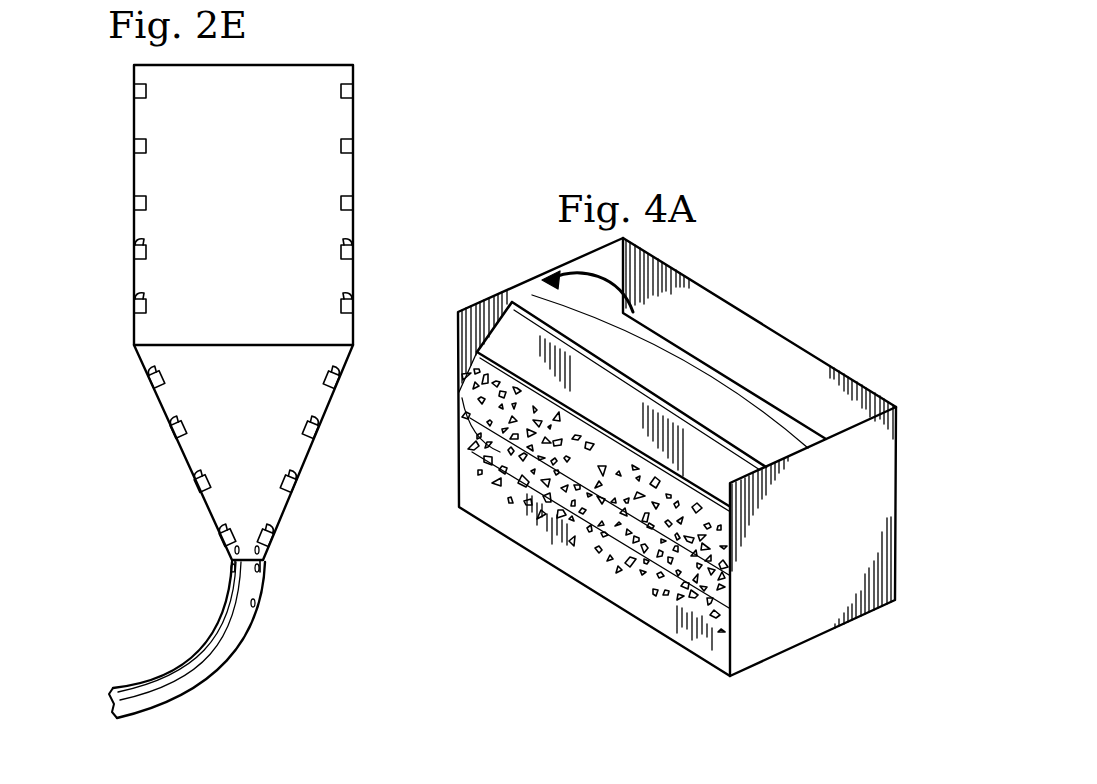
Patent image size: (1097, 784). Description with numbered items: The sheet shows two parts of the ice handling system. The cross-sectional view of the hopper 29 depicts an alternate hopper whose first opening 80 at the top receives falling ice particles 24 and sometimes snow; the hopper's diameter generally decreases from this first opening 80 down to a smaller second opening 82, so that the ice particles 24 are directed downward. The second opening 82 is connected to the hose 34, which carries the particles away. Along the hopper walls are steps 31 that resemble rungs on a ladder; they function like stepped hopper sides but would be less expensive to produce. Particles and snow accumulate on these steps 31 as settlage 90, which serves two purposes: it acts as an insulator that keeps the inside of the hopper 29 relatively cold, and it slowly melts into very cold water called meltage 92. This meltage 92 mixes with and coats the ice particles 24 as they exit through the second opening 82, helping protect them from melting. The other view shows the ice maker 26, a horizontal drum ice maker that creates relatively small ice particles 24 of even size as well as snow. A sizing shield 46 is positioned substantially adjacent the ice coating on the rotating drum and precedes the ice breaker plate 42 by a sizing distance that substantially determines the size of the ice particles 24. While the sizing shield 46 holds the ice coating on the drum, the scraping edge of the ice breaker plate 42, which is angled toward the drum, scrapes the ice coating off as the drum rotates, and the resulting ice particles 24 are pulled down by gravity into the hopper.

In FIG. 2E, the hopper 29 is at (106, 236).
In FIG. 2E, the first opening 80 is at (347, 64).
In FIG. 2E, the steps 31 is at (353, 142).
In FIG. 2E, the settlage 90 is at (353, 250).
In FIG. 2E, the second opening 82 is at (232, 567).
In FIG. 2E, the meltage 92 is at (266, 570).
In FIG. 2E, the hose 34 is at (236, 672).
In FIG. 4A, the ice maker 26 is at (842, 322).
In FIG. 4A, the sizing shield 46 is at (528, 355).
In FIG. 4A, the ice breaker plate 42 is at (458, 388).
In FIG. 4A, the ice particles 24 is at (447, 450).